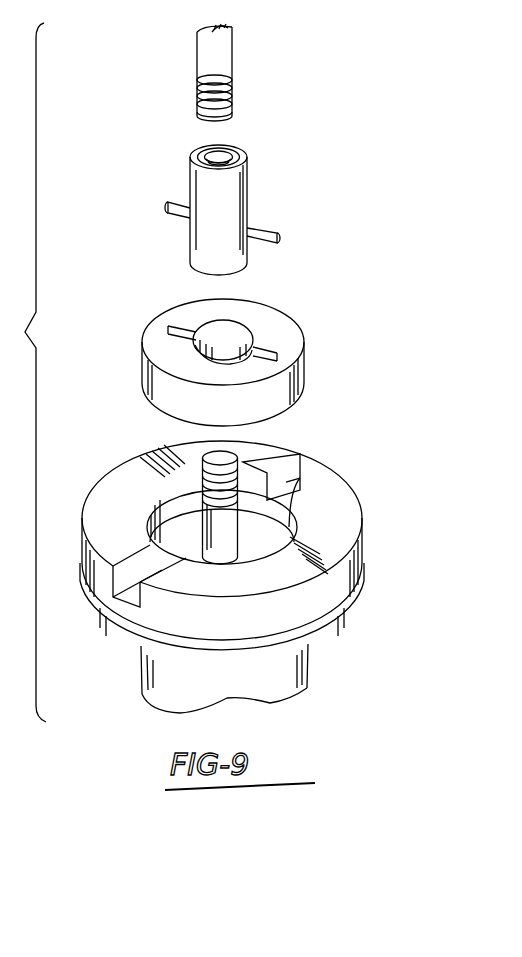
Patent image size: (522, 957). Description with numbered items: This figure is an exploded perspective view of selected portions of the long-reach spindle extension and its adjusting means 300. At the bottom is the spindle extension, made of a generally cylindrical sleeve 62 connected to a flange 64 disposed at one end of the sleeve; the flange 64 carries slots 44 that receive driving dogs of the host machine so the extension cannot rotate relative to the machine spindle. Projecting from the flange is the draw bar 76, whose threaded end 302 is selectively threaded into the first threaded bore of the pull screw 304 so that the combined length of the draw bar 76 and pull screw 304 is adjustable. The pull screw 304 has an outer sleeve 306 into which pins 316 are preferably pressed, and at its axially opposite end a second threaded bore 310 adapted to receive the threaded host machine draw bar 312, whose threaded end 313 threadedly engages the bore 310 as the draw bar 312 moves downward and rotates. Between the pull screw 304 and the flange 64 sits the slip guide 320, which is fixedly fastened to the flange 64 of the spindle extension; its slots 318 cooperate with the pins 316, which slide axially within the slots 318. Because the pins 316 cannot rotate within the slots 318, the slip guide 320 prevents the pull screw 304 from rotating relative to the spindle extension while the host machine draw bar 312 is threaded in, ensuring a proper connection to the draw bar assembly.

The adjusting means 300 is at (368, 254).
The threaded end 302 is at (250, 452).
The pull screw 304 is at (250, 192).
The outer sleeve 306 is at (193, 243).
The second threaded bore 310 is at (242, 146).
The host machine draw bar 312 is at (228, 53).
The threaded end 313 is at (232, 105).
The pins 316 is at (275, 240).
The slots 318 is at (183, 322).
The slip guide 320 is at (142, 366).
The slots 44 is at (318, 468).
The sleeve 62 is at (308, 670).
The flange 64 is at (355, 572).
The draw bar 76 is at (155, 492).